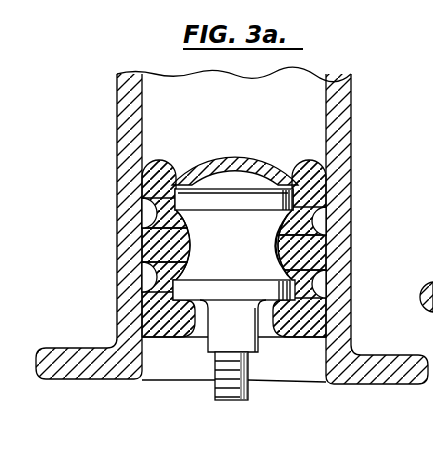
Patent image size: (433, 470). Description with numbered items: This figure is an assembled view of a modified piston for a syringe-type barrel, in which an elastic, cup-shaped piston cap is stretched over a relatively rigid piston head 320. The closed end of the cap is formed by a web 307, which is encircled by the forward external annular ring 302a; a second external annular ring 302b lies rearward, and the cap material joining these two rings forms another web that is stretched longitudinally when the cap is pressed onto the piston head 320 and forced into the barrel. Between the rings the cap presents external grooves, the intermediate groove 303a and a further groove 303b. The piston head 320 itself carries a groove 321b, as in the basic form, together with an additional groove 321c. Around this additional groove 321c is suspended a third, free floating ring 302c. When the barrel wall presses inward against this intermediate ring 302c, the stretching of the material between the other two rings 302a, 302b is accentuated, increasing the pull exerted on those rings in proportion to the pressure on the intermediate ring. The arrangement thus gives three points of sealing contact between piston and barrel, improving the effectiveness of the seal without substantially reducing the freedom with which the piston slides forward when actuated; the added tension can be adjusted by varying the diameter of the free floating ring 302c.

The external annular ring 302a is at (327, 184).
The external annular ring 302b is at (328, 322).
The free floating ring 302c is at (326, 247).
The intermediate groove 303a is at (322, 209).
The groove 303b is at (325, 276).
The web 307 is at (238, 157).
The piston head 320 is at (246, 249).
The groove 321b is at (266, 328).
The additional groove 321c is at (140, 234).